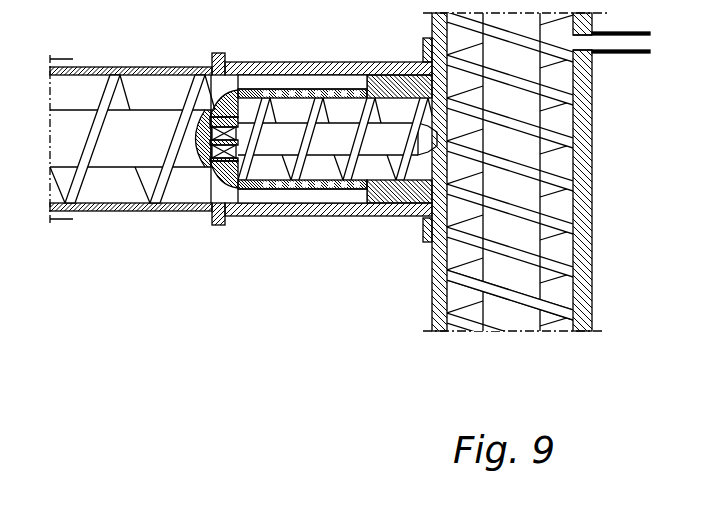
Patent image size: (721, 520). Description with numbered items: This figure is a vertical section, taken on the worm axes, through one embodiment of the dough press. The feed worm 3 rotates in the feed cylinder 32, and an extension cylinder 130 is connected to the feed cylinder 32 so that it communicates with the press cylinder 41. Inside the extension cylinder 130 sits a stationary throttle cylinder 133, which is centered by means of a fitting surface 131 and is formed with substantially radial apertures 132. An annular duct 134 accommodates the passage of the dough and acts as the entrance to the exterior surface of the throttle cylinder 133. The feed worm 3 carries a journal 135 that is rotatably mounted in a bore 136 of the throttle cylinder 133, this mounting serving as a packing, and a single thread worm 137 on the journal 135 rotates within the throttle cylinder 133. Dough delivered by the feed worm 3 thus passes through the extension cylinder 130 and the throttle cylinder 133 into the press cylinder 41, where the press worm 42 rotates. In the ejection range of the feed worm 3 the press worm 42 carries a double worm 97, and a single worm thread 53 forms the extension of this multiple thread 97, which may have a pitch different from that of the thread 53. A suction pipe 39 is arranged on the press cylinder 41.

The feed worm 3 is at (69, 122).
The feed cylinder 32 is at (160, 67).
The suction pipe 39 is at (622, 54).
The press cylinder 41 is at (588, 200).
The press worm 42 is at (500, 318).
The single worm thread 53 is at (548, 316).
The double worm 97 is at (557, 148).
The extension cylinder 130 is at (335, 62).
The fitting surface 131 is at (383, 63).
The radial apertures 132 is at (320, 122).
The throttle cylinder 133 is at (253, 63).
The annular duct 134 is at (292, 84).
The journal 135 is at (236, 162).
The bore 136 is at (222, 174).
The single thread worm 137 is at (389, 129).